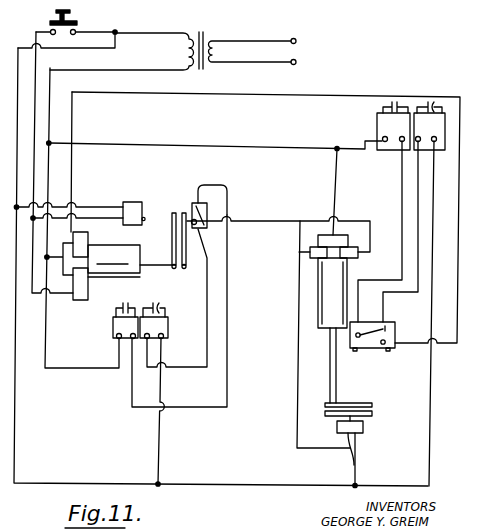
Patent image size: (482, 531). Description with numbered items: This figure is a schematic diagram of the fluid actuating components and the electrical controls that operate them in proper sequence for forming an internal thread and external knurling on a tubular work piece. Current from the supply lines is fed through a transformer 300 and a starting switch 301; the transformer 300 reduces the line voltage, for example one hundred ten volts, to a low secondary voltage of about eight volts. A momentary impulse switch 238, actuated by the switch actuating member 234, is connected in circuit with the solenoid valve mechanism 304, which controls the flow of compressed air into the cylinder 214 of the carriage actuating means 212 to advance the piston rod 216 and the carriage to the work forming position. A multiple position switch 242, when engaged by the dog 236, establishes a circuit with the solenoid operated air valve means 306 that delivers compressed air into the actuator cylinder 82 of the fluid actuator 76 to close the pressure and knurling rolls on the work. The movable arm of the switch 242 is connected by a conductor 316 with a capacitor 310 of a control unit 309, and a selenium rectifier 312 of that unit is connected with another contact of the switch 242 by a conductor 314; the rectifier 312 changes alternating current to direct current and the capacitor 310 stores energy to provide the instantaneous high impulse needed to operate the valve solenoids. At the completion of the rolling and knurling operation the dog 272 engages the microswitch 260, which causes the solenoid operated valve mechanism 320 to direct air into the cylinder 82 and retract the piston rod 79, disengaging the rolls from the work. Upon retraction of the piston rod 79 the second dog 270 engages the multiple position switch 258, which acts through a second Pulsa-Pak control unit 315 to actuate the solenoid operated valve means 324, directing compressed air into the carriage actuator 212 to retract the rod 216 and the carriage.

The transformer 300 is at (206, 32).
The starting switch 301 is at (82, 22).
The second Pulsa-Pak unit 315 is at (370, 122).
The solenoid operated air valve means 306 is at (348, 240).
The solenoid operated valve mechanism 320 is at (309, 247).
The fluid actuator 76 is at (312, 272).
The actuator cylinder 82 is at (317, 293).
The piston rod 79 is at (328, 360).
The switch actuating dog 270 is at (367, 404).
The switch actuating dog 272 is at (371, 417).
The microswitch 260 is at (352, 450).
The multiple position switch 258 is at (376, 350).
The momentary impulse switch 238 is at (129, 192).
The solenoid operated valve means 324 is at (73, 229).
The fluid actuating means 212 is at (104, 244).
The solenoid valve mechanism 304 is at (87, 302).
The cylinder 214 is at (114, 261).
The piston rod 216 is at (165, 263).
The switch actuating member 236 is at (201, 268).
The switch actuating member 234 is at (182, 212).
The multiple position switch 242 is at (190, 188).
The conductor 316 is at (227, 332).
The conductor 314 is at (208, 262).
The capacitor 310 is at (126, 298).
The selenium rectifier 312 is at (157, 299).
The control unit 309 is at (162, 343).